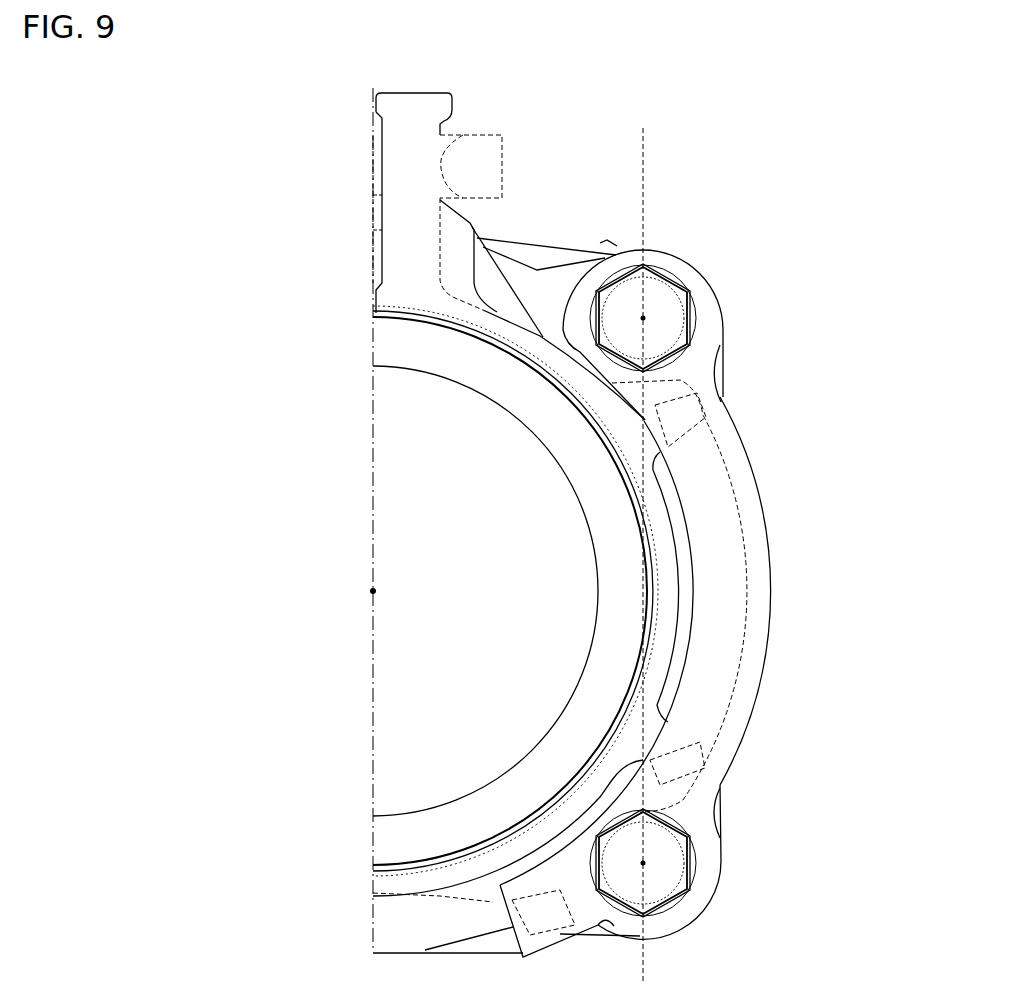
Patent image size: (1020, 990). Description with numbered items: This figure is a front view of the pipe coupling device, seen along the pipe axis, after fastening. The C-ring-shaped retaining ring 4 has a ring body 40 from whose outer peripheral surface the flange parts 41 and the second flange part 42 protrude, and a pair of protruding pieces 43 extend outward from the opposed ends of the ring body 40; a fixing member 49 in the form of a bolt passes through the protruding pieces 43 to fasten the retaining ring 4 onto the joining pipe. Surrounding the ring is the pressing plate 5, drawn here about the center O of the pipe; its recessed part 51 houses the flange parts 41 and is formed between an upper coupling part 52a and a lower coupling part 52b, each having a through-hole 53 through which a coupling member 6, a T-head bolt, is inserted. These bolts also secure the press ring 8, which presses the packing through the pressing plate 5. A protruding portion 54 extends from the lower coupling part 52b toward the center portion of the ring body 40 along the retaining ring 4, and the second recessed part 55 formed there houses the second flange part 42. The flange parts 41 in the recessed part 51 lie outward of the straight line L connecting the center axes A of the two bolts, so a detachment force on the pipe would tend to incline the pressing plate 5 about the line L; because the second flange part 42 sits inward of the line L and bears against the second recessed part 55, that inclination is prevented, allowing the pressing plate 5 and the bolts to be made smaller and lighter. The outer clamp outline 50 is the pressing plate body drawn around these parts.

The retaining ring 4 is at (491, 609).
The ring body 40 is at (587, 609).
The flange part 41 is at (700, 413).
The second flange part 42 is at (373, 893).
The protruding piece 43 is at (395, 100).
The fixing member 49 is at (485, 137).
The pressing plate 5 is at (665, 619).
The second flange portion 50 is at (670, 619).
The recessed part 51 is at (717, 553).
The upper coupling part 52a is at (723, 293).
The lower coupling part 52b is at (664, 887).
The through-hole 53 is at (680, 581).
The protruding portion 54 is at (525, 955).
The second recessed part 55 is at (605, 938).
The coupling member 6 is at (721, 581).
The press ring 8 is at (538, 238).
The center axis A is at (643, 318).
The straight line L is at (648, 142).
The center axis O is at (371, 593).